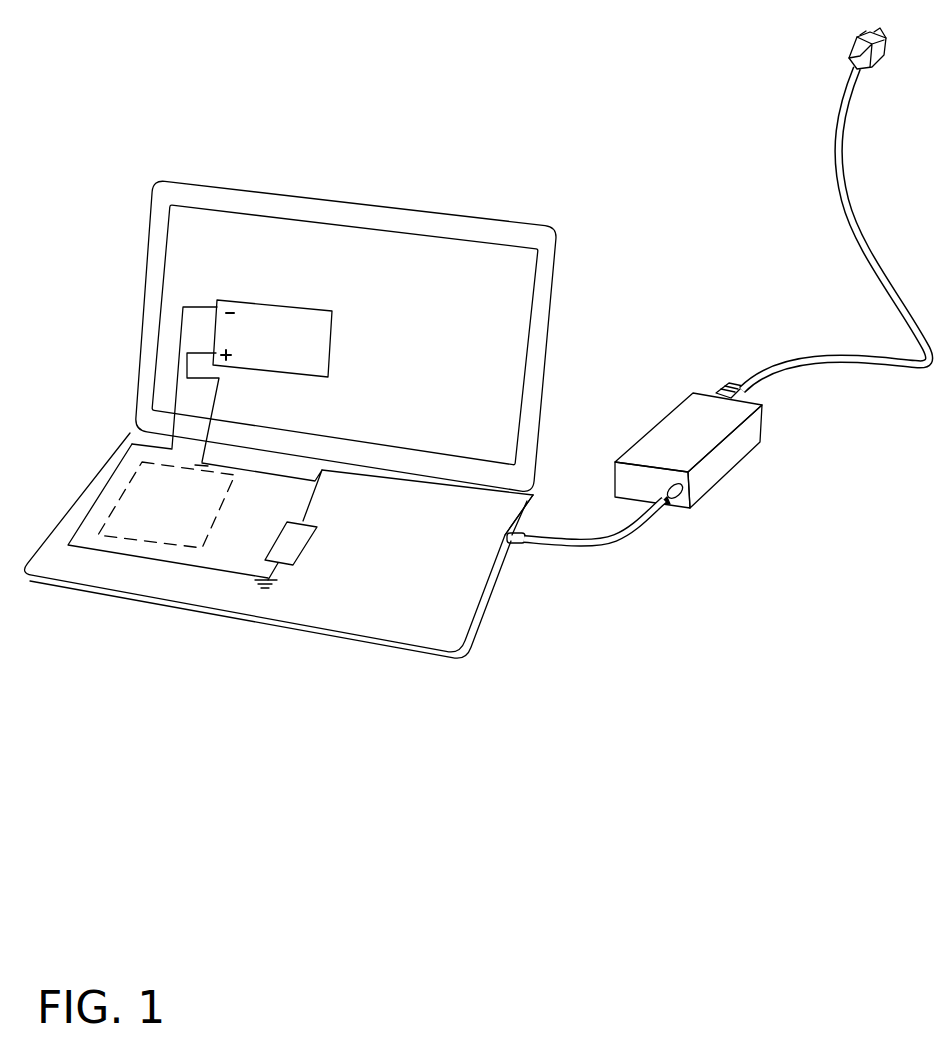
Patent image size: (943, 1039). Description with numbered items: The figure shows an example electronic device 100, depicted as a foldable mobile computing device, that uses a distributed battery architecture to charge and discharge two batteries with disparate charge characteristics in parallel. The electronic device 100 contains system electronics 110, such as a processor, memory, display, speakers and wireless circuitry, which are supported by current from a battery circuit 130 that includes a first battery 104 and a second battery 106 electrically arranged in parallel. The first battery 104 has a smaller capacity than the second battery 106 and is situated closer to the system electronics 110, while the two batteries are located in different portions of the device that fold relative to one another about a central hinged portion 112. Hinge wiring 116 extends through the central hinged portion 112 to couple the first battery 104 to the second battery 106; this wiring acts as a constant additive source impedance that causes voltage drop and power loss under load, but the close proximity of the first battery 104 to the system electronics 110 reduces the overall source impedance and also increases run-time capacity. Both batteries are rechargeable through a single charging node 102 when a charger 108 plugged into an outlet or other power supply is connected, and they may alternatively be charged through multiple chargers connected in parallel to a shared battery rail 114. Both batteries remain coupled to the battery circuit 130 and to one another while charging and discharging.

The electronic device 100 is at (140, 98).
The charging node 102 is at (514, 545).
The first battery 104 is at (304, 546).
The second battery 106 is at (291, 350).
The charger 108 is at (713, 444).
The system electronics 110 is at (190, 515).
The central hinged portion 112 is at (531, 495).
The shared battery rail 114 is at (290, 478).
The hinge wiring 116 is at (135, 418).
The battery circuit 130 is at (316, 412).